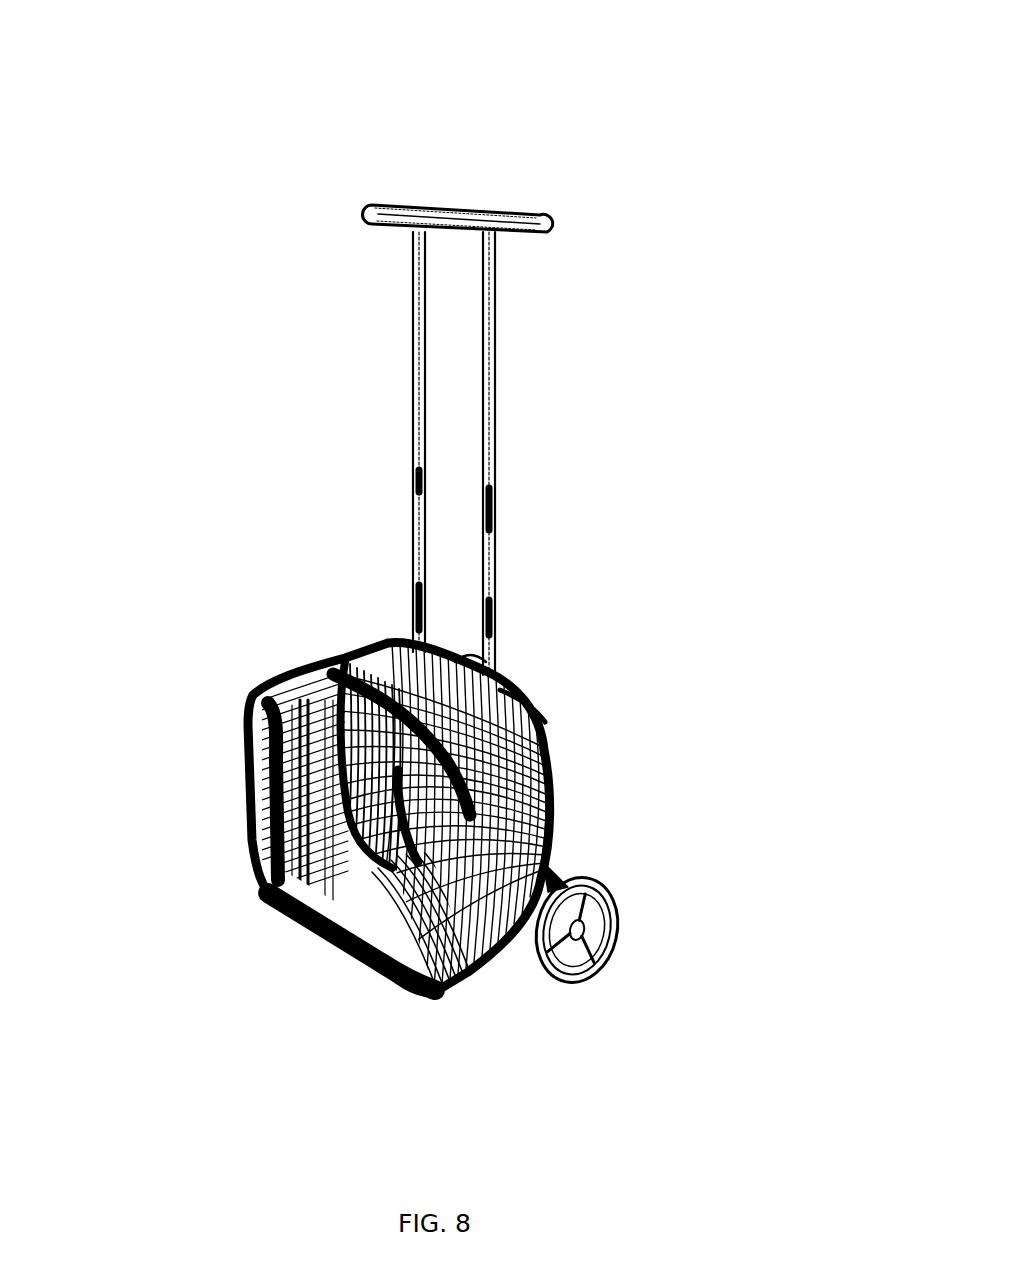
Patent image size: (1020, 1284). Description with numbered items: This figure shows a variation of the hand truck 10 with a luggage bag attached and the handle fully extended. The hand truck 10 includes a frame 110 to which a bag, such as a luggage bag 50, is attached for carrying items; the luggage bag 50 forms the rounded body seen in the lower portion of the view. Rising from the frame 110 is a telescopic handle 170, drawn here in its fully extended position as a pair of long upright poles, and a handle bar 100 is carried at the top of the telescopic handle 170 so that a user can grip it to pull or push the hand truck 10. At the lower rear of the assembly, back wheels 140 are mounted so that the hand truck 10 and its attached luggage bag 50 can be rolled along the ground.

The hand truck 10 is at (576, 150).
The handle bar 100 is at (377, 206).
The telescopic handle 170 is at (418, 395).
The luggage bag 50 is at (250, 705).
The frame 110 is at (533, 707).
The back wheels 140 is at (613, 897).